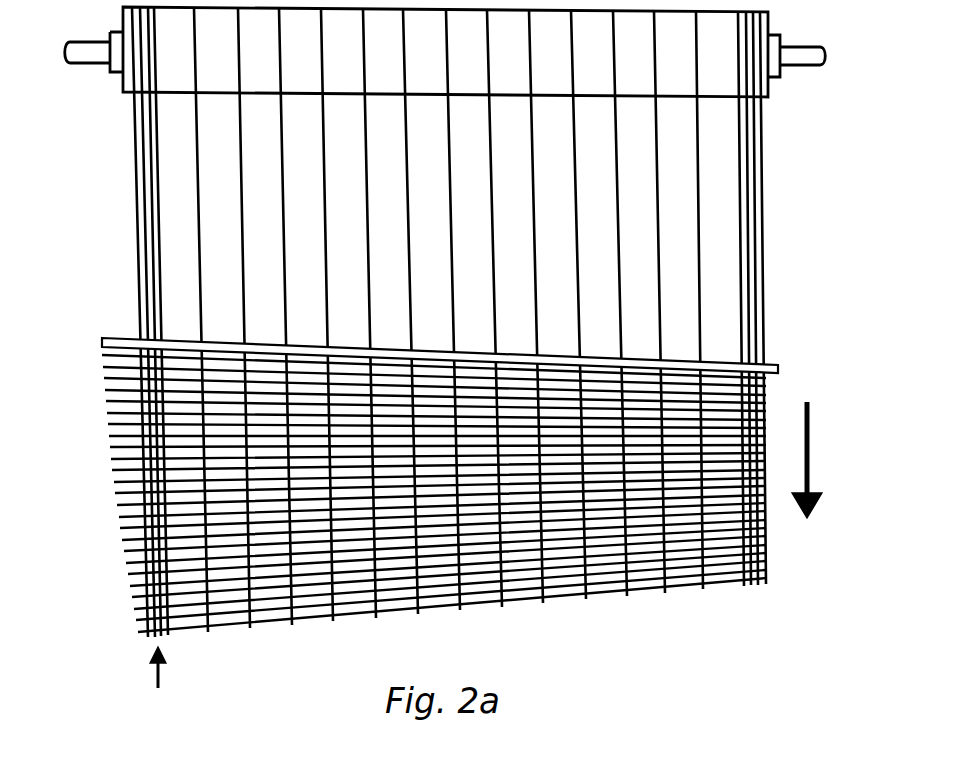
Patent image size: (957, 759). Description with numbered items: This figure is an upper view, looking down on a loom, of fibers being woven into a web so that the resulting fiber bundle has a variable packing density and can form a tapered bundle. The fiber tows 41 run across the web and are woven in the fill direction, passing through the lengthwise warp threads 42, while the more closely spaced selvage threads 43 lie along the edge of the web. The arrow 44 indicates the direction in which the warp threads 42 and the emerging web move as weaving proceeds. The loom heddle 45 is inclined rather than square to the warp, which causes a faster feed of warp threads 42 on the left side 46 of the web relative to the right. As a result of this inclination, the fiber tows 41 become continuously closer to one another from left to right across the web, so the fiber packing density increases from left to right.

The fiber tows 41 is at (108, 403).
The warp threads 42 is at (695, 228).
The selvage threads 43 is at (758, 280).
The arrow 44 is at (808, 455).
The loom heddle 45 is at (770, 365).
The left side of the web 46 is at (159, 685).